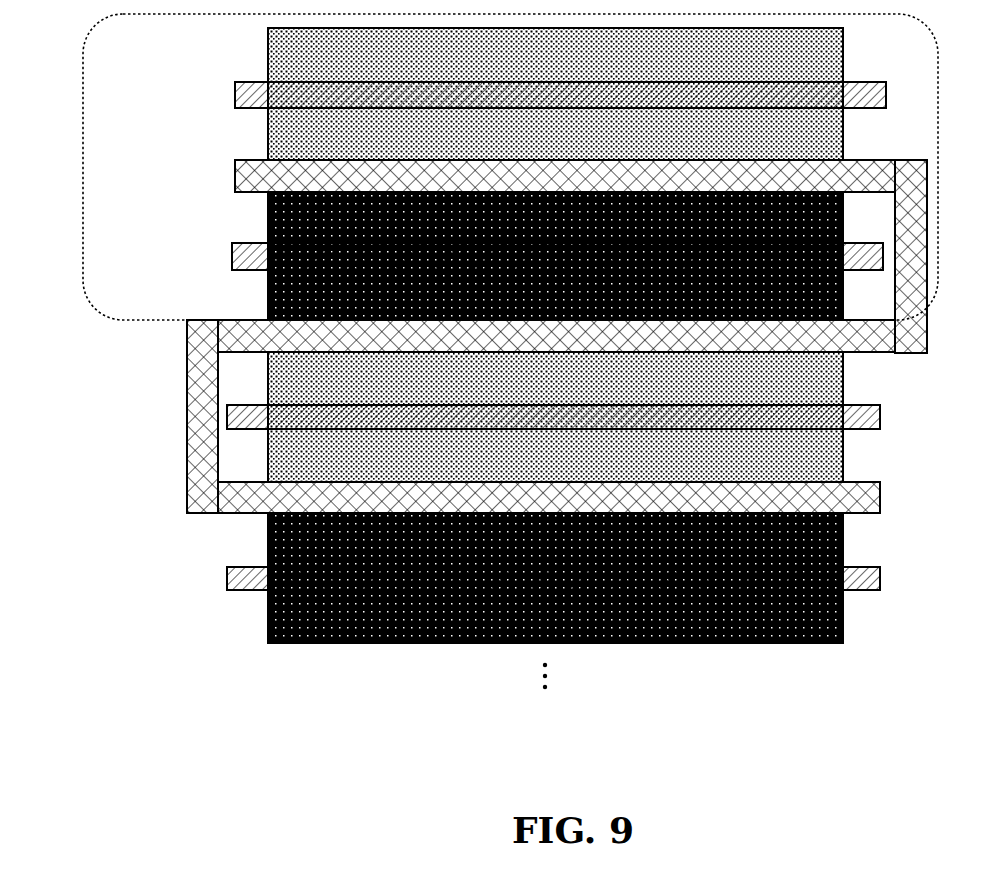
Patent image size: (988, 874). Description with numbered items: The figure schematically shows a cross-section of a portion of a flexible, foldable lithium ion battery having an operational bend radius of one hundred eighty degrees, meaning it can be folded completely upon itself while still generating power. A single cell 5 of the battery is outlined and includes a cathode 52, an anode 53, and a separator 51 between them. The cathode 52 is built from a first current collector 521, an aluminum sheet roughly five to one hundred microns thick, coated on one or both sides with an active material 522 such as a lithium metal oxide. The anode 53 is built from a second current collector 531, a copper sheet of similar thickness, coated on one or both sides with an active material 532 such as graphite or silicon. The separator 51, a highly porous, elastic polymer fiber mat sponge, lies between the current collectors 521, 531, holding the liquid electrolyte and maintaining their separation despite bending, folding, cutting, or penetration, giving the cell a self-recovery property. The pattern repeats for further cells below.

The single cell 5 is at (83, 168).
The separator 51 is at (235, 170).
The cathode 52 is at (490, 94).
The first current collector 521 is at (531, 83).
The active material 522 is at (268, 132).
The anode 53 is at (485, 256).
The second current collector 531 is at (232, 258).
The active material 532 is at (268, 210).